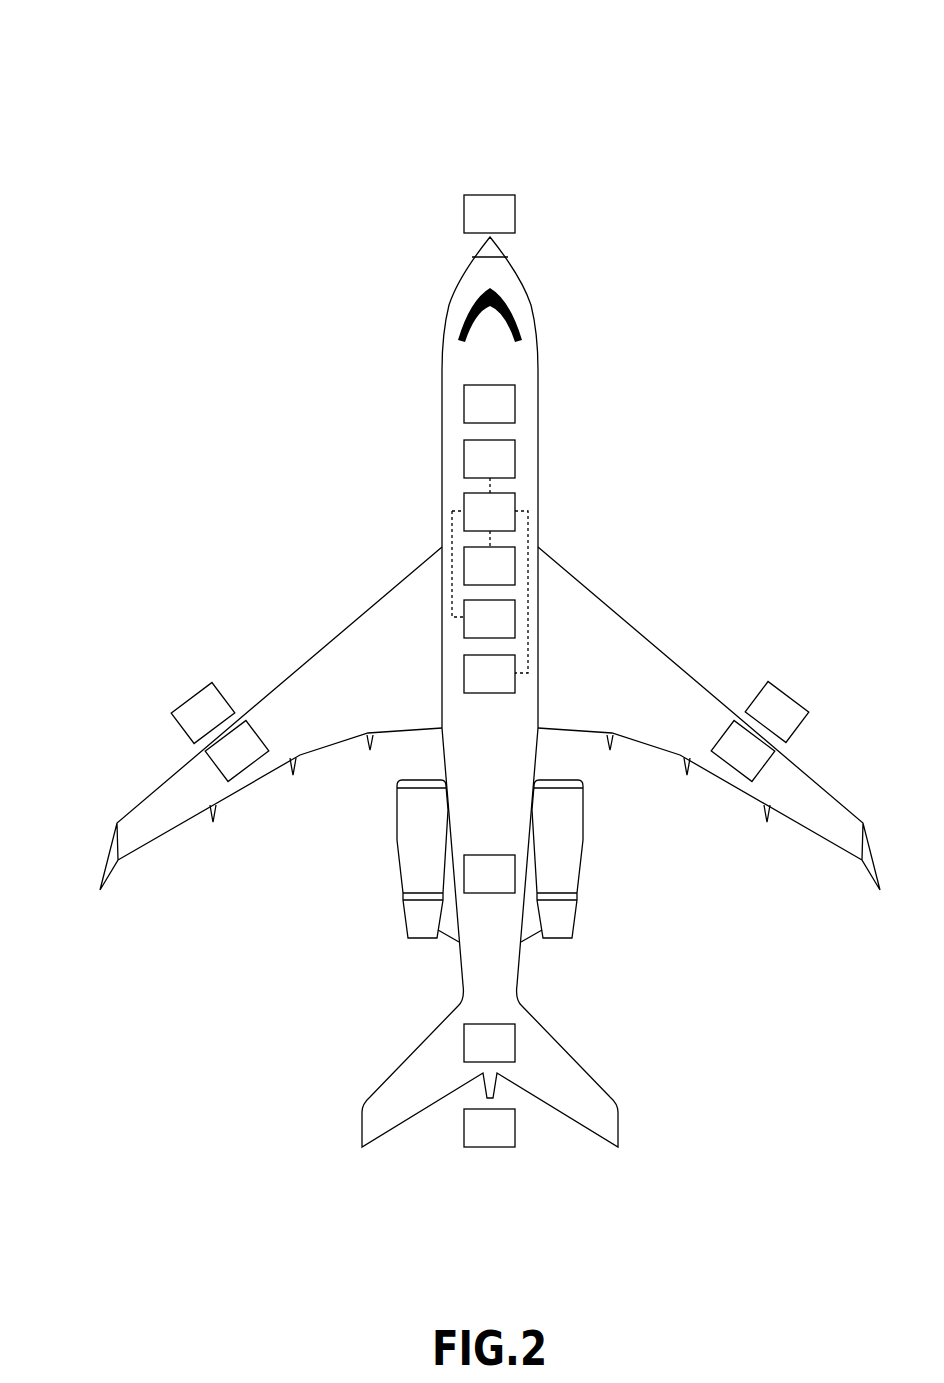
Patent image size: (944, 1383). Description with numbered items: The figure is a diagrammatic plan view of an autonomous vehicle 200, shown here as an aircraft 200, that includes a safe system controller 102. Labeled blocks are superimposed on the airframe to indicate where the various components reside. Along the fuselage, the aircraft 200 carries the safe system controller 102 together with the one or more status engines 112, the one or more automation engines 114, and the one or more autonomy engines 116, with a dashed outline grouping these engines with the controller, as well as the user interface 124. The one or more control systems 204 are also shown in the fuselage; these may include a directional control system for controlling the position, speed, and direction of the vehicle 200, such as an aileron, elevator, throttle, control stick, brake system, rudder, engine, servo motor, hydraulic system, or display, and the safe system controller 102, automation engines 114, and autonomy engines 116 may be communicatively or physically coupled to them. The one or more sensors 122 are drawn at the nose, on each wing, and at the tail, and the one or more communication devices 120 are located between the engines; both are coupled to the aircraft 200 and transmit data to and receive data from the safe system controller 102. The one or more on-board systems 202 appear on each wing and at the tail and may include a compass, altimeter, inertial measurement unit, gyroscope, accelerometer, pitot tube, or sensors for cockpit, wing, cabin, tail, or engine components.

The vehicle 200 is at (150, 43).
The sensors 122 is at (470, 226).
The on-board systems 202 is at (470, 1055).
The control systems 204 is at (470, 416).
The user interface 124 is at (470, 471).
The safe system controller 102 is at (470, 524).
The status engines 112 is at (470, 578).
The automation engines 114 is at (470, 631).
The autonomy engines 116 is at (470, 686).
The communication devices 120 is at (470, 886).